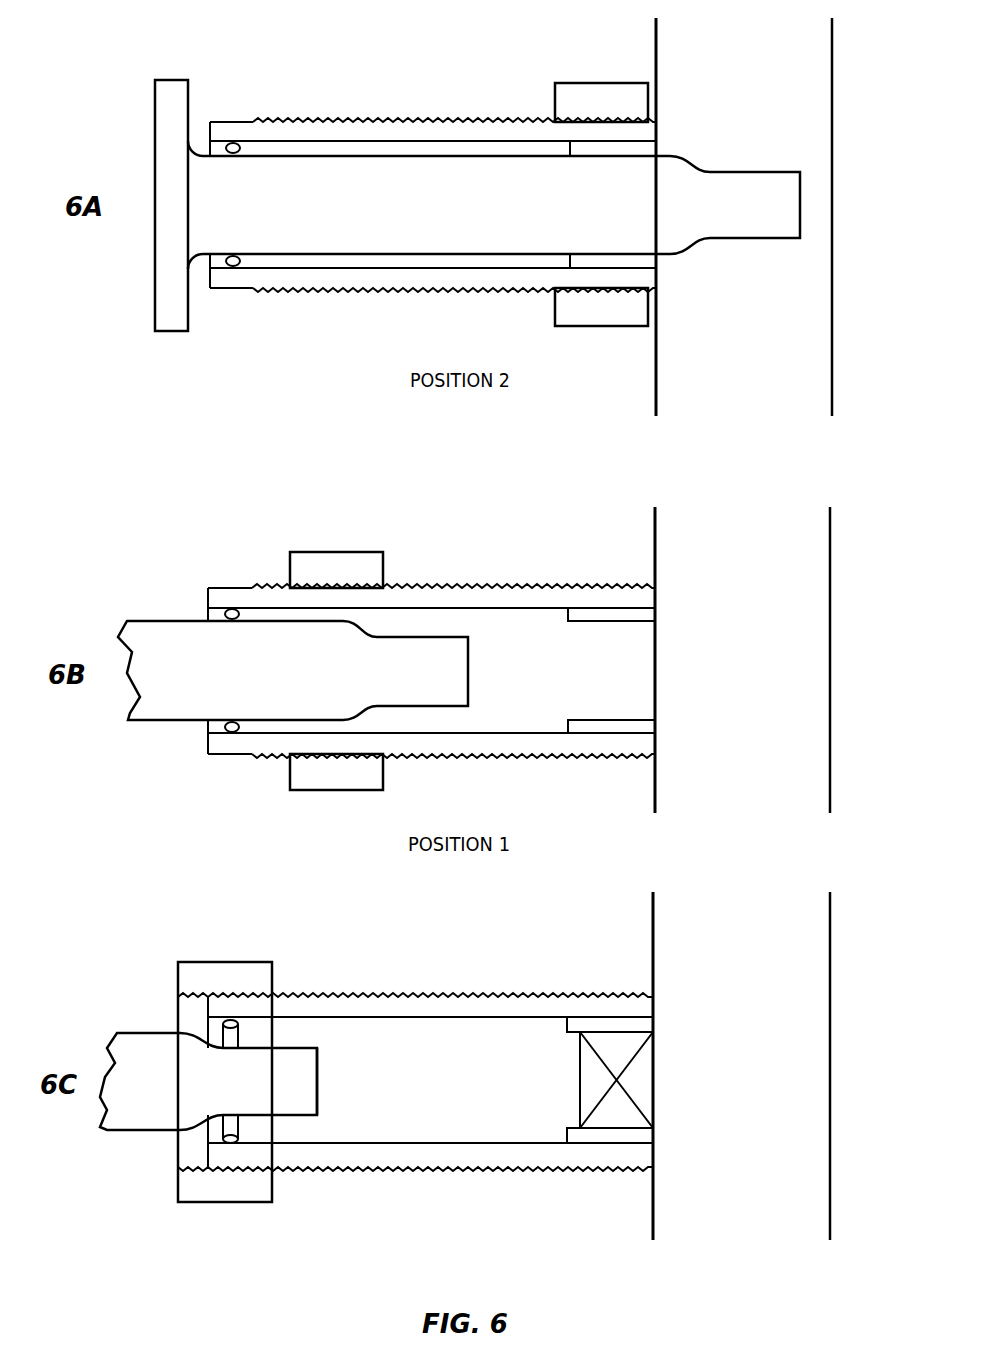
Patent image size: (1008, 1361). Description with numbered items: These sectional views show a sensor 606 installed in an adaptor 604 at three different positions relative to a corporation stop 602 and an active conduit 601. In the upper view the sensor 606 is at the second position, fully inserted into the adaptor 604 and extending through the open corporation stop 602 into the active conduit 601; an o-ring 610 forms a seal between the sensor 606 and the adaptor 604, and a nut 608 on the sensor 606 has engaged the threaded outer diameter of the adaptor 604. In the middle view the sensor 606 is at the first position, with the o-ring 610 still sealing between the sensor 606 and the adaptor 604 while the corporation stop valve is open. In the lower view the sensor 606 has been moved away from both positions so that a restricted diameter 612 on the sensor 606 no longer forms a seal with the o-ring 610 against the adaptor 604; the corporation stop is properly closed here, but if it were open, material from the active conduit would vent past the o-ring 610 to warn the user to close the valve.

In FIG. 6A, the active conduit 601 is at (812, 363).
In FIG. 6A, the corporation stop 602 is at (645, 258).
In FIG. 6B, the corporation stop 602 is at (630, 718).
In FIG. 6A, the adaptor 604 is at (427, 121).
In FIG. 6B, the adaptor 604 is at (528, 737).
In FIG. 6C, the adaptor 604 is at (485, 1143).
In FIG. 6A, the sensor 606 is at (155, 302).
In FIG. 6B, the sensor 606 is at (147, 722).
In FIG. 6C, the sensor 606 is at (130, 1033).
In FIG. 6A, the nut 608 is at (575, 83).
In FIG. 6B, the nut 608 is at (358, 552).
In FIG. 6C, the nut 608 is at (193, 962).
In FIG. 6A, the o-ring 610 is at (231, 145).
In FIG. 6B, the o-ring 610 is at (230, 734).
In FIG. 6C, the o-ring 610 is at (240, 1131).
In FIG. 6C, the restricted diameter 612 is at (303, 1047).